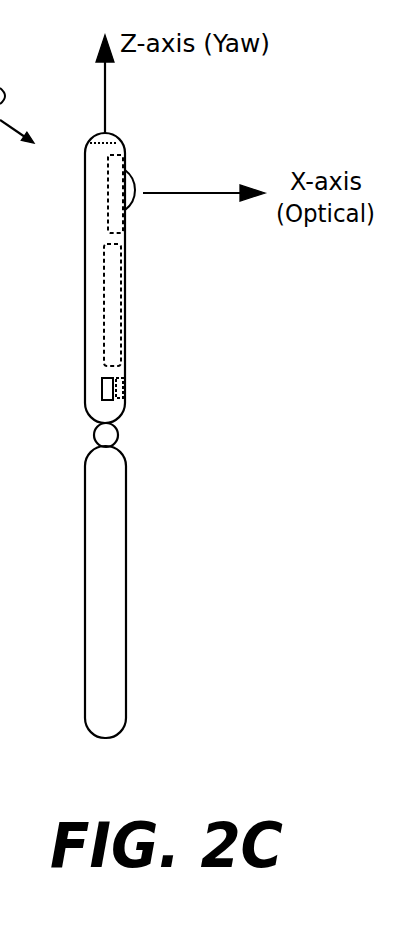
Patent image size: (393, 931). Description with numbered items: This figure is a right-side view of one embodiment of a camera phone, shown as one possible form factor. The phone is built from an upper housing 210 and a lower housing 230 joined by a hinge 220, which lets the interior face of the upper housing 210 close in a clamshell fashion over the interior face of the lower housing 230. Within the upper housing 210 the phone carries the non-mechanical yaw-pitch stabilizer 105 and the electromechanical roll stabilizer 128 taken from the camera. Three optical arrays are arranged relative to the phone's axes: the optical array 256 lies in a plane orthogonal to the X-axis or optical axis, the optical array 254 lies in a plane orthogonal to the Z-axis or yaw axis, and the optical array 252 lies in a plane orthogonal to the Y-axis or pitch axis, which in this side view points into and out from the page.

The non-mechanical yaw-pitch stabilizer 105 is at (110, 300).
The electromechanical roll stabilizer 128 is at (115, 220).
The upper housing 210 is at (85, 262).
The hinge 220 is at (132, 438).
The lower housing 230 is at (126, 588).
The optical array 252 is at (105, 391).
The optical array 254 is at (113, 133).
The optical array 256 is at (140, 383).